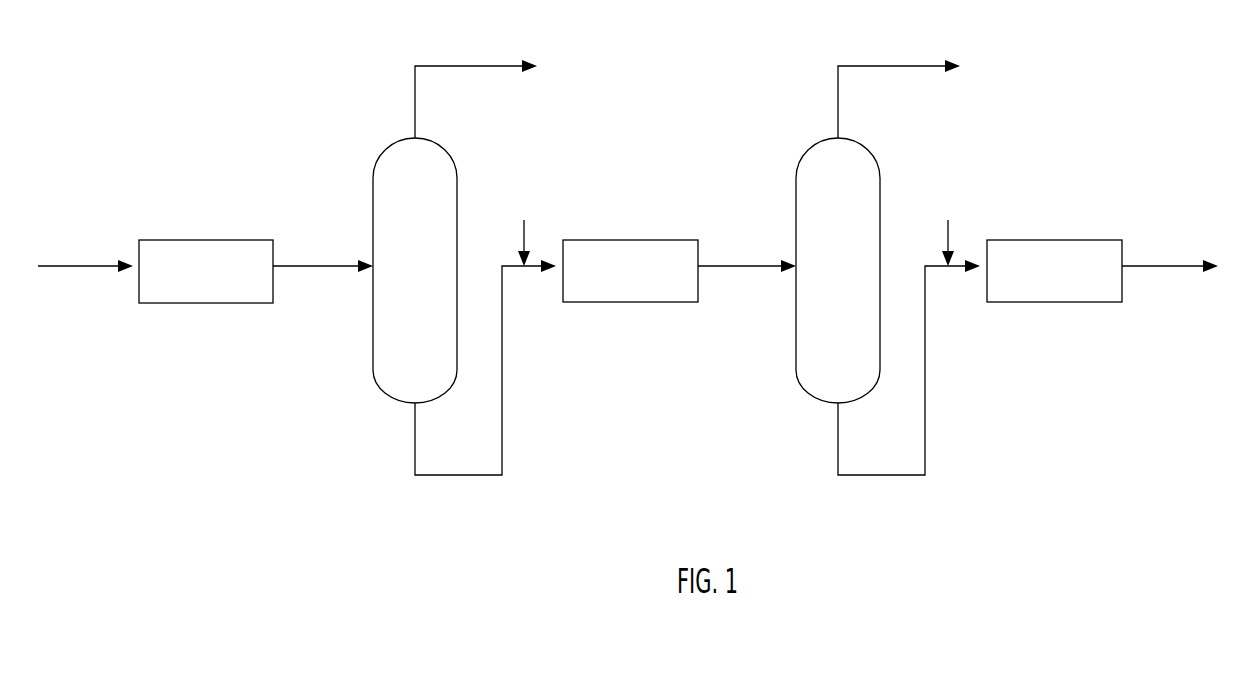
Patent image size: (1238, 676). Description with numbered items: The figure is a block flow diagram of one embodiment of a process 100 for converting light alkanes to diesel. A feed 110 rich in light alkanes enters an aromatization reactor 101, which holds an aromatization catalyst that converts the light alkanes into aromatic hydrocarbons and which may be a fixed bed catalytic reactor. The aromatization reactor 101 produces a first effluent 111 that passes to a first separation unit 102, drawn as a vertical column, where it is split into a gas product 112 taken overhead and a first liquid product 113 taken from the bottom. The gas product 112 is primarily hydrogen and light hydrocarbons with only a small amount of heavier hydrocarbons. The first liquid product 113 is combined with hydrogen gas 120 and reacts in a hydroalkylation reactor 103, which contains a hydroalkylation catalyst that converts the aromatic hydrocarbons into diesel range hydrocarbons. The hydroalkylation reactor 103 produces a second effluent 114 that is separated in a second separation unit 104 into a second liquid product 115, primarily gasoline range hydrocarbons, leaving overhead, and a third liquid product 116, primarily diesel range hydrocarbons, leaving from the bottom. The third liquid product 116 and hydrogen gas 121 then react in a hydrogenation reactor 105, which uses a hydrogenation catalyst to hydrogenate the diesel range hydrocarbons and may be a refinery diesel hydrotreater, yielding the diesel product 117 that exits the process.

The process 100 is at (201, 100).
The aromatization reactor 101 is at (223, 283).
The first separation unit 102 is at (433, 283).
The hydroalkylation reactor 103 is at (648, 283).
The second separation unit 104 is at (856, 283).
The hydrogenation reactor 105 is at (1072, 283).
The feed 110 is at (83, 266).
The first effluent 111 is at (320, 266).
The gas product 112 is at (470, 66).
The first liquid product 113 is at (502, 442).
The second effluent 114 is at (737, 266).
The second liquid product 115 is at (893, 66).
The third liquid product 116 is at (925, 442).
The diesel product 117 is at (1160, 266).
The hydrogen gas 120 is at (523, 228).
The hydrogen gas 121 is at (947, 228).